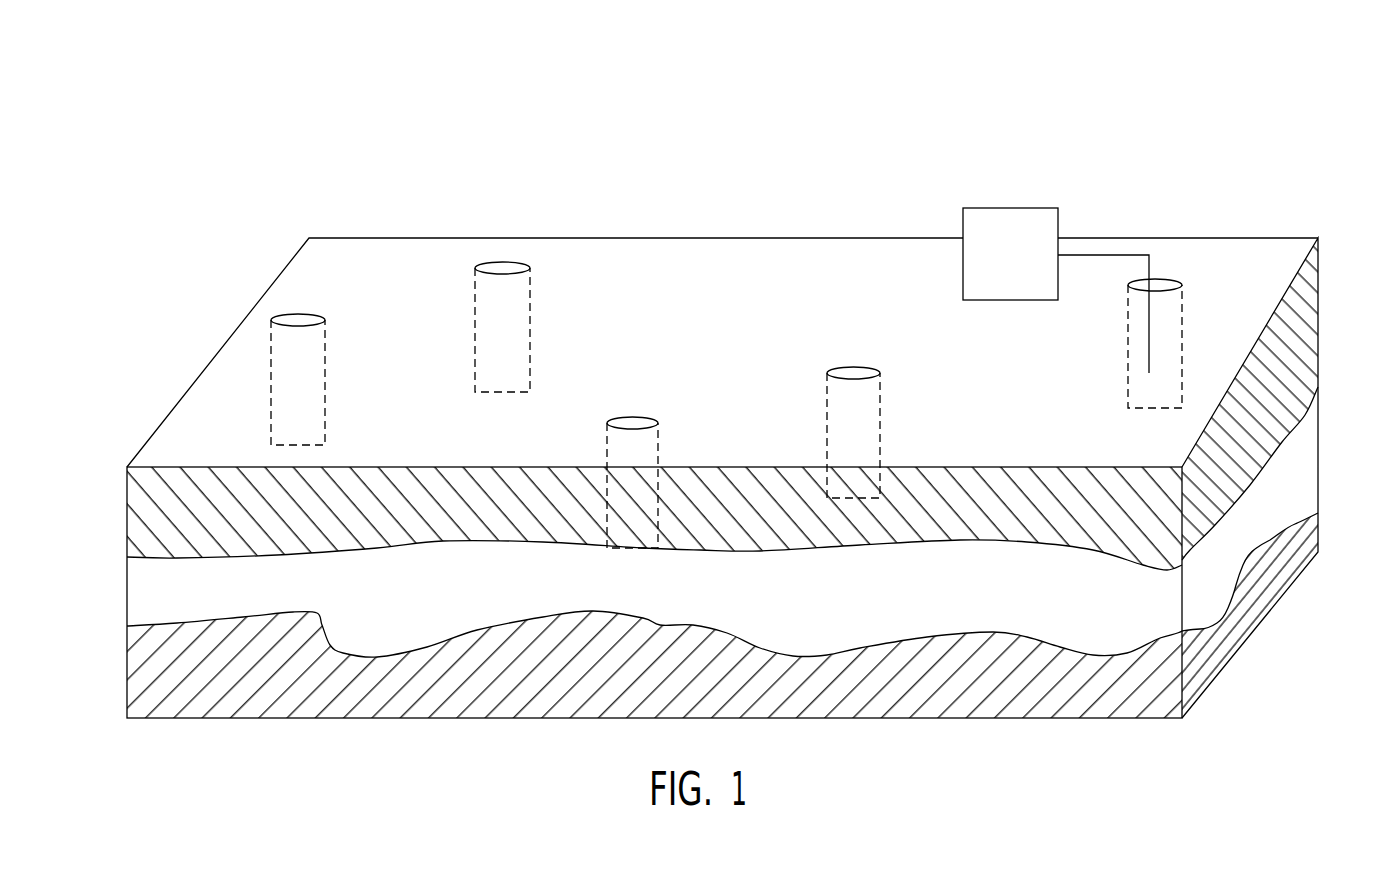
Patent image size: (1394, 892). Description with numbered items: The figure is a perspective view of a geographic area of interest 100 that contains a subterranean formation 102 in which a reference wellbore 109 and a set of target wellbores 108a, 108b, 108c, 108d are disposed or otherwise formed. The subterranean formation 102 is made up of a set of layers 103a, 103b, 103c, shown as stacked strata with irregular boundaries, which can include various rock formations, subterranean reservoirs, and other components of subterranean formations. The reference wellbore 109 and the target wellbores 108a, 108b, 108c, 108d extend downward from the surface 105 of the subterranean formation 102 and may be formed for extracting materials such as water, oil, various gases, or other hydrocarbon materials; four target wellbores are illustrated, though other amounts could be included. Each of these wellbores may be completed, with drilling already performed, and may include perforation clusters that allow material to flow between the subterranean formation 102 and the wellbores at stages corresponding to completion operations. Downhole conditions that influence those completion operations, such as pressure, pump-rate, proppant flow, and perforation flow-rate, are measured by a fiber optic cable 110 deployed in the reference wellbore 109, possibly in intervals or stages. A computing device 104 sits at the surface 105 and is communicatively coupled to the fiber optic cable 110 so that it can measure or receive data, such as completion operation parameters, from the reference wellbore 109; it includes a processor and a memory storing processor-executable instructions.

The geographic area of interest 100 is at (256, 142).
The subterranean formation 102 is at (85, 552).
The layer 103a is at (1308, 333).
The layer 103b is at (1307, 463).
The layer 103c is at (1308, 538).
The computing device 104 is at (996, 265).
The surface 105 is at (742, 252).
The target wellbore 108a is at (288, 317).
The target wellbore 108b is at (502, 264).
The target wellbore 108c is at (632, 419).
The target wellbore 108d is at (853, 369).
The reference wellbore 109 is at (1149, 281).
The fiber optic cable 110 is at (1150, 327).